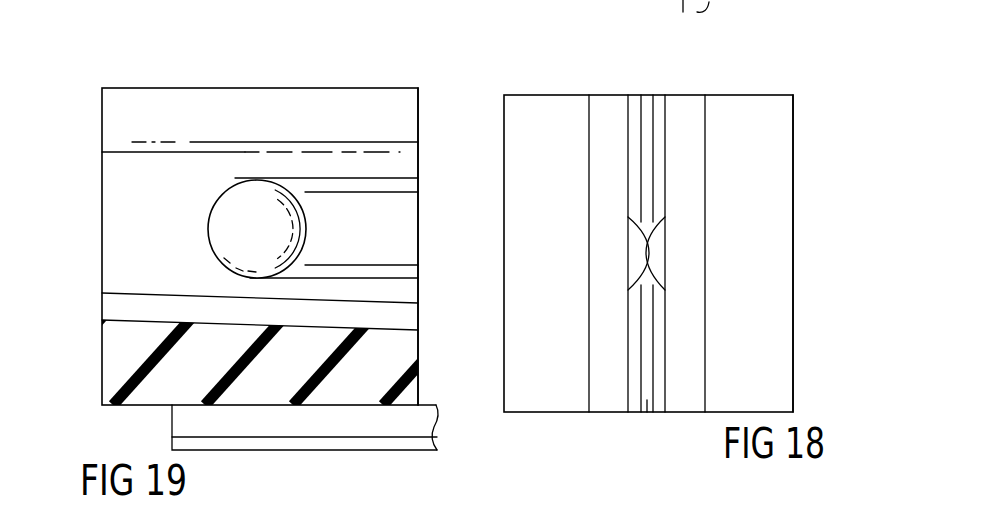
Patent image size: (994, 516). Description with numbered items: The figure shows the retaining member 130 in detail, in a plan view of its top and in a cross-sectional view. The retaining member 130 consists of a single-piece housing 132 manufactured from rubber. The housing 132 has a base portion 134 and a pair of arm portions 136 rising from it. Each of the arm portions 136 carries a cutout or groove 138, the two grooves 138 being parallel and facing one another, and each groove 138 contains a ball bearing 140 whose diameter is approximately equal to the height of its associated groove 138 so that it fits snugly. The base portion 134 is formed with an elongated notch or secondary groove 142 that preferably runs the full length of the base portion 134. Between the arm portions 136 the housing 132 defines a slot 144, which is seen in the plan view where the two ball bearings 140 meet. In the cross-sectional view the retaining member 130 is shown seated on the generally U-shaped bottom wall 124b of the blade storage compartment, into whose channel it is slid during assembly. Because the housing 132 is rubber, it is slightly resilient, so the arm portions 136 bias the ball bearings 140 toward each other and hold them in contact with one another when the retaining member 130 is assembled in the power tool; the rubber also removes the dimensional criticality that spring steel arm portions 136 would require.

In FIG. 19, the retaining member 130 is at (90, 78).
In FIG. 18, the retaining member 130 is at (806, 84).
In FIG. 19, the housing 132 is at (428, 80).
In FIG. 18, the housing 132 is at (806, 337).
In FIG. 19, the arm portions 136 is at (118, 167).
In FIG. 18, the arm portions 136 is at (773, 191).
In FIG. 19, the grooves 138 is at (383, 218).
In FIG. 19, the ball bearing 140 is at (263, 240).
In FIG. 18, the ball bearing 140 is at (632, 262).
In FIG. 19, the secondary groove 142 is at (117, 303).
In FIG. 18, the secondary groove 142 is at (646, 110).
In FIG. 19, the base portion 134 is at (143, 347).
In FIG. 19, the bottom wall 124b is at (420, 430).
In FIG. 18, the slot 144 is at (645, 428).